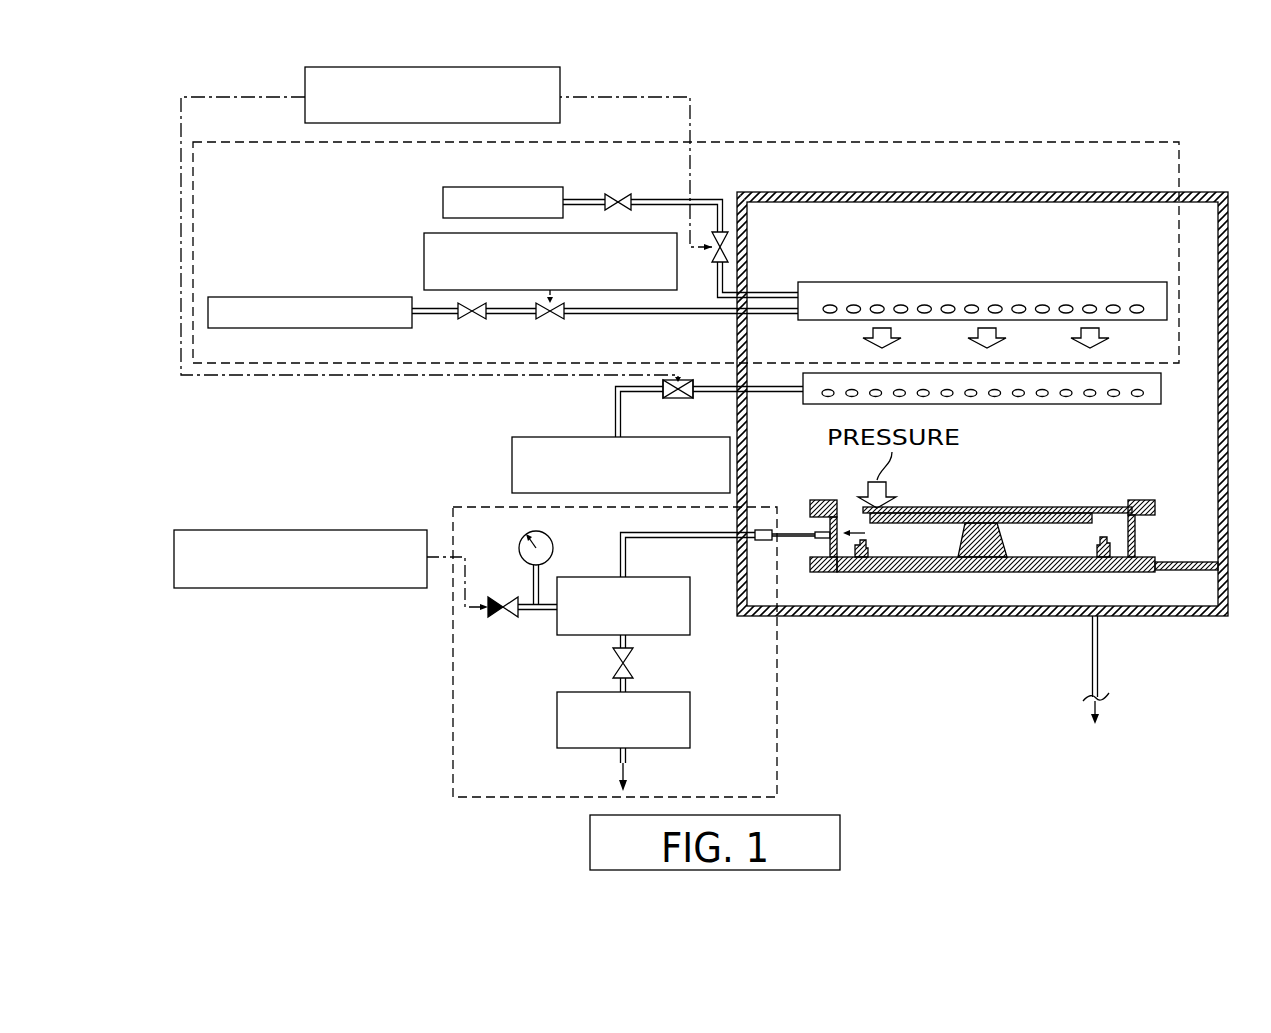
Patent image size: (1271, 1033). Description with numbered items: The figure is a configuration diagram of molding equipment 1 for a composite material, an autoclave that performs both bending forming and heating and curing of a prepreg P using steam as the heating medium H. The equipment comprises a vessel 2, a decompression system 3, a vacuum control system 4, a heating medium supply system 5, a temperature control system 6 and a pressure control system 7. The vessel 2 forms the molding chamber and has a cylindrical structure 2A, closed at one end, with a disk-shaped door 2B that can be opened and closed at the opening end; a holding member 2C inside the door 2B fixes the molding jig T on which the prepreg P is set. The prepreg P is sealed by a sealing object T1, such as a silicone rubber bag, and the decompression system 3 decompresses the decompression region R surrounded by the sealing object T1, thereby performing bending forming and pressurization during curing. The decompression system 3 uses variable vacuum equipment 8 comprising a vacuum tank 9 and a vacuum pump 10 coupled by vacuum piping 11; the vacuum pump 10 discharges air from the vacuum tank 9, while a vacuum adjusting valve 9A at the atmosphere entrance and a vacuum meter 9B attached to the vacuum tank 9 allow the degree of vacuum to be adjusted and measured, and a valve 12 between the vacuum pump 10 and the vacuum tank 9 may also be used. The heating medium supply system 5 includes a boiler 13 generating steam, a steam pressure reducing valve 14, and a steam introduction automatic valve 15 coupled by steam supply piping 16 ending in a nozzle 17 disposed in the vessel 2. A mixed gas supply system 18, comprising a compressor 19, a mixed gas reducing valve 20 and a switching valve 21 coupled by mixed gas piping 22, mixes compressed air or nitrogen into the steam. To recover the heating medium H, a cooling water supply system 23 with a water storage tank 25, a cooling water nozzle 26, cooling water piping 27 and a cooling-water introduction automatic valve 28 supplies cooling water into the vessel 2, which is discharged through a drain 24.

The molding equipment 1 is at (1001, 354).
The vessel 2 is at (1001, 382).
The cylindrical structure 2A is at (820, 192).
The door 2B is at (1228, 300).
The holding member 2C is at (1178, 562).
The decompression system 3 is at (650, 652).
The vacuum control system 4 is at (229, 530).
The heating medium supply system 5 is at (779, 138).
The temperature control system 6 is at (560, 82).
The pressure control system 7 is at (635, 233).
The variable vacuum equipment 8 is at (452, 655).
The vacuum tank 9 is at (650, 577).
The vacuum adjusting valve 9A is at (497, 617).
The vacuum meter 9B is at (549, 536).
The vacuum pump 10 is at (683, 692).
The vacuum piping 11 is at (695, 533).
The valve 12 is at (634, 665).
The boiler 13 is at (537, 187).
The steam pressure reducing valve 14 is at (612, 194).
The steam introduction automatic valve 15 is at (713, 252).
The steam supply piping 16 is at (767, 292).
The nozzle 17 is at (1048, 282).
The mixed gas supply system 18 is at (310, 288).
The compressor 19 is at (362, 297).
The mixed gas reducing valve 20 is at (474, 320).
The switching valve 21 is at (552, 320).
The mixed gas piping 22 is at (751, 315).
The cooling water supply system 23 is at (621, 440).
The drain 24 is at (1098, 658).
The water storage tank 25 is at (650, 437).
The cooling water nozzle 26 is at (1047, 404).
The cooling water piping 27 is at (770, 394).
The cooling-water introduction automatic valve 28 is at (693, 395).
The heating medium H is at (1100, 335).
The molding jig T is at (932, 503).
The sealing object T1 is at (1013, 507).
The prepreg P is at (1012, 525).
The decompression region R is at (892, 539).